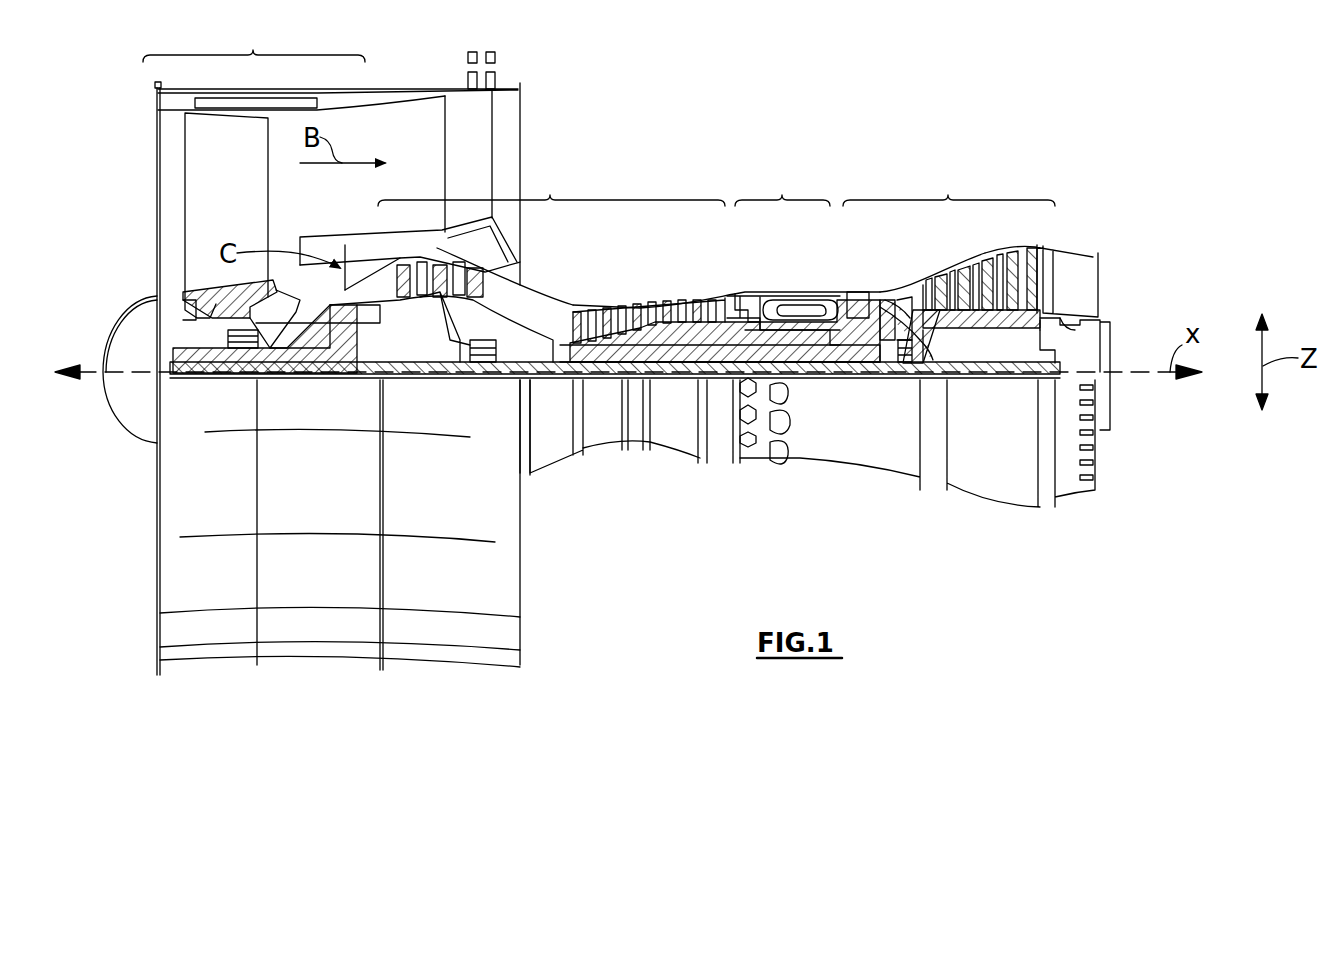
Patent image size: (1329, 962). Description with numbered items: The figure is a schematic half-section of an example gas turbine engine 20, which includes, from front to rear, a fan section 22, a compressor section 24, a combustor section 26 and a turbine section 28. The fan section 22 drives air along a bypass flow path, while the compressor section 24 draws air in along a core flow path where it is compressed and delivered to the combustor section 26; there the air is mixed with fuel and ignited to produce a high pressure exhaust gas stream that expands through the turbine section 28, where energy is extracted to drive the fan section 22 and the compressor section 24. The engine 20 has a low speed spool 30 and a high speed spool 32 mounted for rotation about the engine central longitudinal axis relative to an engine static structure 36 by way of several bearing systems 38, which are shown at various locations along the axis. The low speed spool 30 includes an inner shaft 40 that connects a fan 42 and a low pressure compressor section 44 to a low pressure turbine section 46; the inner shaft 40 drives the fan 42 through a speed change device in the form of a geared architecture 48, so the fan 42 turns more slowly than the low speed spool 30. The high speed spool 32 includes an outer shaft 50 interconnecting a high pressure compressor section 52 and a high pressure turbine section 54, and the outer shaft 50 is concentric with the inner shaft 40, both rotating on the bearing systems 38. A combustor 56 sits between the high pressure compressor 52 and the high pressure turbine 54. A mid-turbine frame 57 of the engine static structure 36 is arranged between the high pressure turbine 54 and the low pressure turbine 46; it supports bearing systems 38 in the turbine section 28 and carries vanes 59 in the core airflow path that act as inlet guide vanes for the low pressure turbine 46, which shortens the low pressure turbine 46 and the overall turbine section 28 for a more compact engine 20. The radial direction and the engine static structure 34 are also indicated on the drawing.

The gas turbine engine 20 is at (800, 135).
The fan section 22 is at (254, 40).
The compressor section 24 is at (551, 184).
The combustor section 26 is at (782, 184).
The turbine section 28 is at (949, 184).
The low speed spool 30 is at (677, 385).
The high speed spool 32 is at (723, 310).
The engine static structure 34 is at (1005, 335).
The engine static structure 36 is at (717, 468).
The bearing systems 38 is at (233, 353).
The inner shaft 40 is at (545, 376).
The fan 42 is at (240, 218).
The low pressure compressor section 44 is at (455, 273).
The low pressure turbine section 46 is at (985, 263).
The geared architecture 48 is at (347, 353).
The outer shaft 50 is at (803, 357).
The high pressure compressor section 52 is at (643, 315).
The high pressure turbine section 54 is at (858, 297).
The combustor 56 is at (797, 313).
The mid-turbine frame 57 is at (900, 280).
The vanes 59 is at (933, 347).